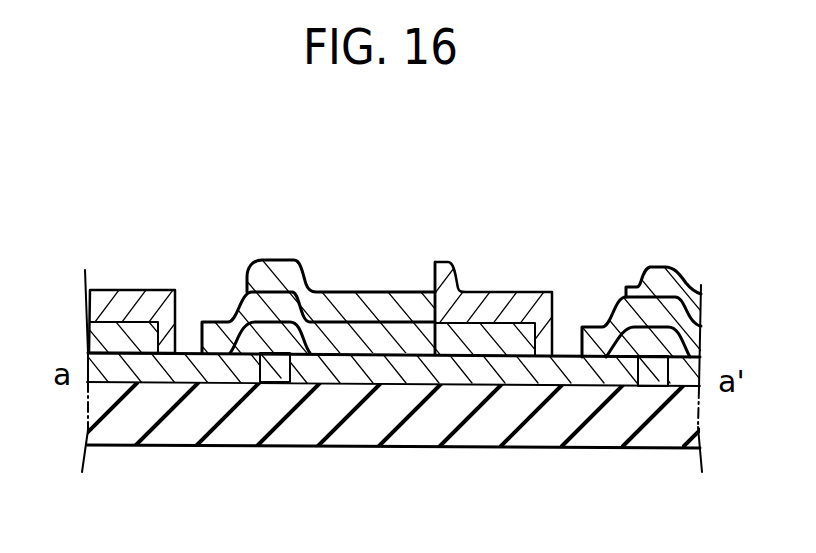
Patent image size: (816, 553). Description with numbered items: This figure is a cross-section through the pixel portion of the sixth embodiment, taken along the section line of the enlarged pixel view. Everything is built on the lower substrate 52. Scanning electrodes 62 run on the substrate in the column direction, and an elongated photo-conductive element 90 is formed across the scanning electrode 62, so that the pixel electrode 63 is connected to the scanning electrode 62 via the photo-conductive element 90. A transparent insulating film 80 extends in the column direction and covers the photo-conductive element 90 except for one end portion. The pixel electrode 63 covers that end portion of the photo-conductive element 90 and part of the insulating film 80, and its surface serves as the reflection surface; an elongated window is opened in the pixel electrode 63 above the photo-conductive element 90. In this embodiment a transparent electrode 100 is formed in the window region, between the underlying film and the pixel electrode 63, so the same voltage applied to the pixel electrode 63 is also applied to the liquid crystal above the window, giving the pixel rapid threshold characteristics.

The lower substrate 52 is at (528, 428).
The scanning electrode 62 is at (273, 372).
The pixel electrode 63 is at (167, 298).
The transparent insulating film 80 is at (383, 340).
The photo-conductive element 90 is at (187, 373).
The transparent electrode 100 is at (117, 333).